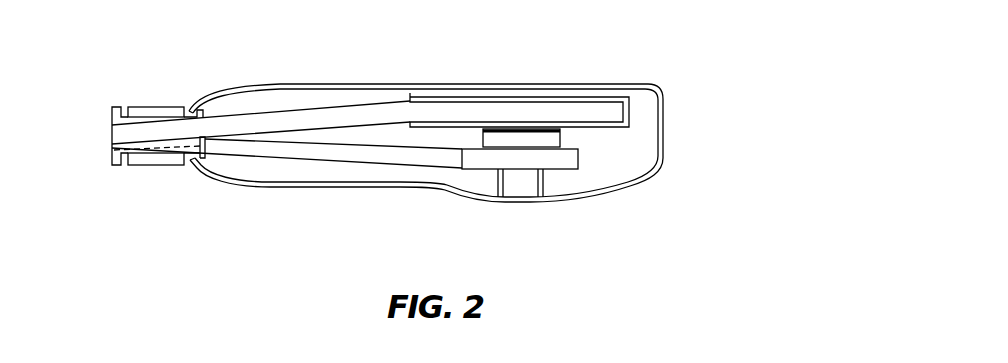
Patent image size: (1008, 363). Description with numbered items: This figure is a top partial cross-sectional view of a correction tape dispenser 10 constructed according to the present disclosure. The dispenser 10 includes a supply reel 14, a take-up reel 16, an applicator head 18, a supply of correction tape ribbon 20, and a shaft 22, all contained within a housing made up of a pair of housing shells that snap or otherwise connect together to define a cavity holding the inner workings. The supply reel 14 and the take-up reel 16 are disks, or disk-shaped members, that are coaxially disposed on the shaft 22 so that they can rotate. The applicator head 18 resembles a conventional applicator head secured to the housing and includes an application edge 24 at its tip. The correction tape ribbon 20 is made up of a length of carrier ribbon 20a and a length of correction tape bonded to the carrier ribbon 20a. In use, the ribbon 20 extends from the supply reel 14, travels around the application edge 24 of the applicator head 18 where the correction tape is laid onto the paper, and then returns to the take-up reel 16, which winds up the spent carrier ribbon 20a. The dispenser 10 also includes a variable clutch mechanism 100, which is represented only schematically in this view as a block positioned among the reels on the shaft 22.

The correction tape dispenser 10 is at (660, 80).
The supply reel 14 is at (294, 120).
The take-up reel 16 is at (472, 162).
The applicator head 18 is at (162, 165).
The correction tape ribbon 20 is at (457, 104).
The carrier ribbon 20a is at (357, 158).
The shaft 22 is at (547, 178).
The application edge 24 is at (115, 107).
The variable clutch mechanism 100 is at (572, 138).